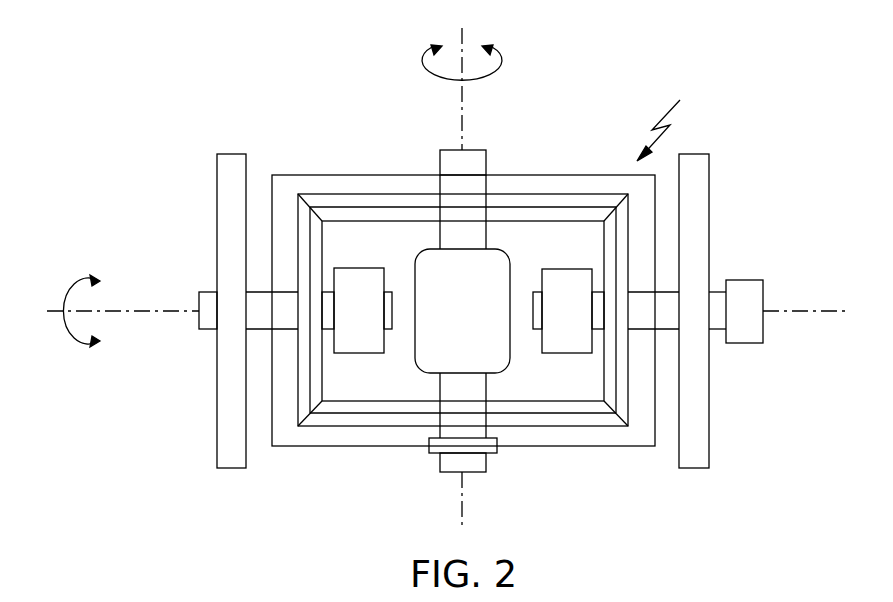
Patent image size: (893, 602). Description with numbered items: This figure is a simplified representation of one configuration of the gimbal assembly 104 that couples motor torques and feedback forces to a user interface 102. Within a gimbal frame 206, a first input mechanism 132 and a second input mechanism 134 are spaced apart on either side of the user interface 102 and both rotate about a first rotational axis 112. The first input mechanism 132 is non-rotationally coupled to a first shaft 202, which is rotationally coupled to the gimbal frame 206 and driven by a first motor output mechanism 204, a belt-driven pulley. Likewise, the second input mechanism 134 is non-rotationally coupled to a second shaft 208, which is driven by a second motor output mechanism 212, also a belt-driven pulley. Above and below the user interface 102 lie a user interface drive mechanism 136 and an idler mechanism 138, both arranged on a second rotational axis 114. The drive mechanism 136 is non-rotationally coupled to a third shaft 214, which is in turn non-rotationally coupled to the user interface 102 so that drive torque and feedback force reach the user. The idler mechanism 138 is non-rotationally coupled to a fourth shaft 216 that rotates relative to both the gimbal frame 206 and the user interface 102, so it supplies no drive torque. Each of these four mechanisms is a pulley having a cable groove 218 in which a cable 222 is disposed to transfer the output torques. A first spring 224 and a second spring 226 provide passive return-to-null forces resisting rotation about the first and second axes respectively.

The user interface 102 is at (482, 322).
The gimbal assembly 104 is at (673, 118).
The first rotational axis 112 is at (120, 312).
The second rotational axis 114 is at (462, 30).
The first input mechanism 132 is at (607, 262).
The second input mechanism 134 is at (318, 254).
The user interface drive mechanism 136 is at (388, 200).
The idler mechanism 138 is at (366, 418).
The first shaft 202 is at (712, 292).
The first motor output mechanism 204 is at (703, 184).
The gimbal frame 206 is at (525, 175).
The second shaft 208 is at (208, 292).
The second motor output mechanism 212 is at (228, 153).
The third shaft 214 is at (472, 150).
The fourth shaft 216 is at (478, 473).
The cable groove 218 is at (572, 194).
The cable 222 is at (618, 397).
The first spring 224 is at (745, 343).
The second spring 226 is at (436, 455).